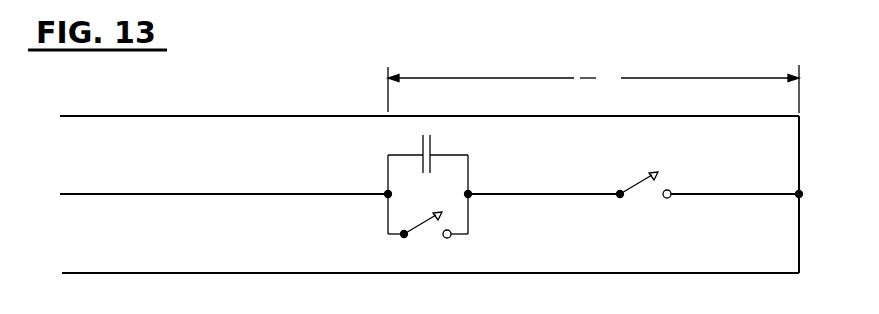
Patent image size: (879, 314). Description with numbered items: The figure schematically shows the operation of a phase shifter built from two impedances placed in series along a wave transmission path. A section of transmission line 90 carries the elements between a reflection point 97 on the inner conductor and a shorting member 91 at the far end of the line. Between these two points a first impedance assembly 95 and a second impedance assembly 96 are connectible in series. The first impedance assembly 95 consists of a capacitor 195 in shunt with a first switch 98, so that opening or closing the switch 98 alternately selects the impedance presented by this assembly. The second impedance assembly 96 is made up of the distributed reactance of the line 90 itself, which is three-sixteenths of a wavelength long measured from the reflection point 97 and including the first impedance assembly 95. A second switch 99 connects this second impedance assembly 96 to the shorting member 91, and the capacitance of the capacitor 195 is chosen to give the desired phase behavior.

The section of transmission line 90 is at (473, 77).
The shorting member 91 is at (799, 157).
The first impedance assembly 95 is at (443, 187).
The second impedance assembly 96 is at (570, 203).
The reflection point 97 is at (385, 192).
The first switch device 98 is at (430, 227).
The second switch device 99 is at (648, 191).
The capacitor 195 is at (428, 136).